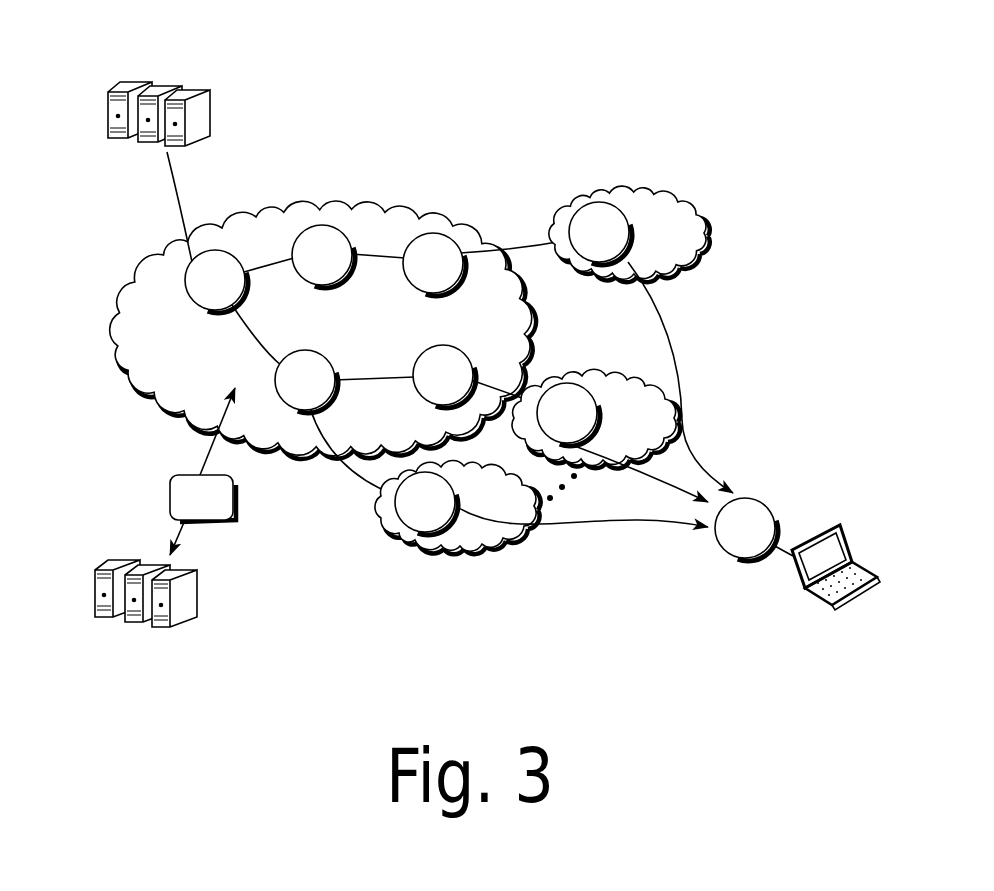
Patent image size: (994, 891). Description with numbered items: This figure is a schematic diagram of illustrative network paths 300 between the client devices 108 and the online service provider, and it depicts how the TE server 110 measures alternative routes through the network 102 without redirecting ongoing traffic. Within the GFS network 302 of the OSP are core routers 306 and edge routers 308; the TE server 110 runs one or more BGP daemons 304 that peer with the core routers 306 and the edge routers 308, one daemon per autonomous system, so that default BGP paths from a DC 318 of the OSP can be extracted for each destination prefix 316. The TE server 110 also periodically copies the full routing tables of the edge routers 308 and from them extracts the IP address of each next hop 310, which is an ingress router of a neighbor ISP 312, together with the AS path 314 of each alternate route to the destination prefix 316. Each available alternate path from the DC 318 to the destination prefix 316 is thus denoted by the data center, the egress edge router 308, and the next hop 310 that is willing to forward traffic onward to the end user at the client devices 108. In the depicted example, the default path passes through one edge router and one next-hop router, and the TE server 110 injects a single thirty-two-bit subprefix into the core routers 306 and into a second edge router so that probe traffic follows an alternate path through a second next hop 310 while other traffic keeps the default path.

The network paths 300 is at (525, 108).
The GFS network 302 is at (118, 222).
The network 102 is at (110, 365).
The BGP daemons 304 is at (170, 488).
The core routers 306 is at (247, 247).
The edge routers 308 is at (473, 348).
The next hop 310 is at (600, 386).
The neighbor ISP 312 is at (655, 190).
The AS path 314 is at (600, 533).
The destination prefix 316 is at (753, 499).
The DC 318 is at (159, 90).
The client devices 108 is at (836, 592).
The TE server 110 is at (143, 609).